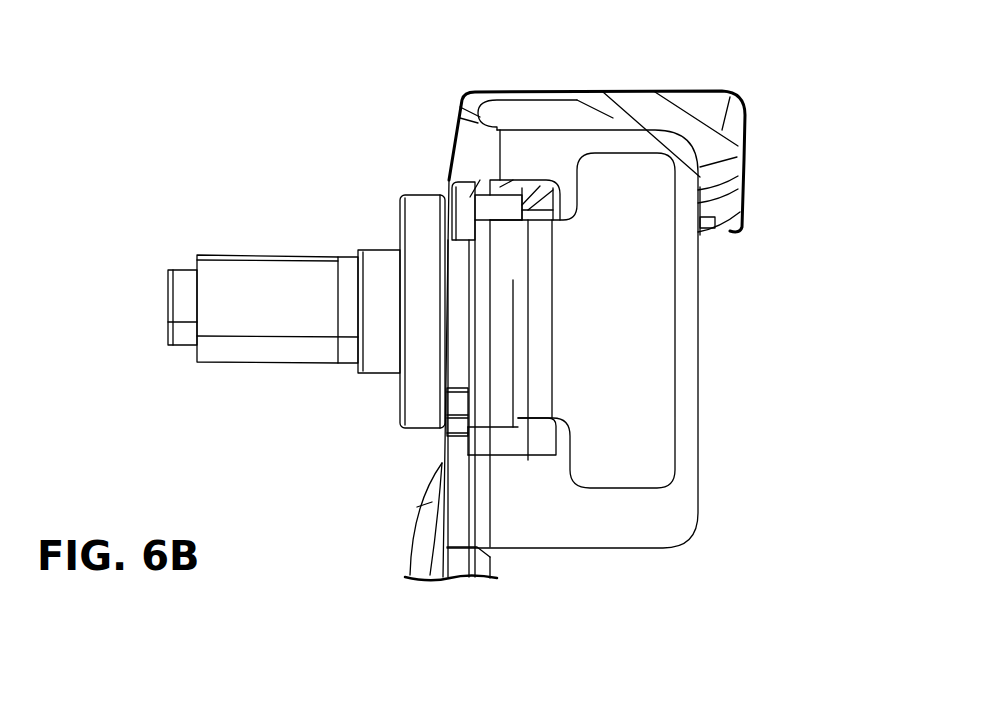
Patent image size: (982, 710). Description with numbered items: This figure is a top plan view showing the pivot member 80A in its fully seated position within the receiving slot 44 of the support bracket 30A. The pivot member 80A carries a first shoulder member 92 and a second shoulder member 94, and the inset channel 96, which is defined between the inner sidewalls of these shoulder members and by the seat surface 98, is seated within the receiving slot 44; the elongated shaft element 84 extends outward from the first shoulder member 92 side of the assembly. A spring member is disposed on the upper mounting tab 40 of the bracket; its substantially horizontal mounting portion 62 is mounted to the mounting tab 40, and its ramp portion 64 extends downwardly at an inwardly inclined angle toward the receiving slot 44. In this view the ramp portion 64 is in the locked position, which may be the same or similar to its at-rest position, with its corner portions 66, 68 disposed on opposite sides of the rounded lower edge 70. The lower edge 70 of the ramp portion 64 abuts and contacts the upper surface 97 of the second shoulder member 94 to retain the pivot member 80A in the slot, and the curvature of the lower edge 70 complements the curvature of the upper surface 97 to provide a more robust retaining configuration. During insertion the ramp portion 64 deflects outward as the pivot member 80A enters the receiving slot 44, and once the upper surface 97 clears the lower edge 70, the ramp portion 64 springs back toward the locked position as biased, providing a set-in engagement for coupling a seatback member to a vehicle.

The support bracket 30A is at (766, 124).
The upper mounting tab 40 is at (682, 427).
The mounting portion 62 is at (640, 452).
The ramp portion 64 is at (510, 357).
The corner portion 66 is at (498, 425).
The corner portion 68 is at (495, 237).
The lower edge 70 is at (497, 303).
The bolt 84 is at (280, 280).
The first shoulder member 92 is at (413, 223).
The second shoulder member 94 is at (507, 403).
The inset channel 96 is at (462, 255).
The upper surface 97 is at (480, 353).
The seat surface 98 is at (458, 328).
The receiving slot 44 is at (437, 310).
The pivot member 80A is at (287, 391).